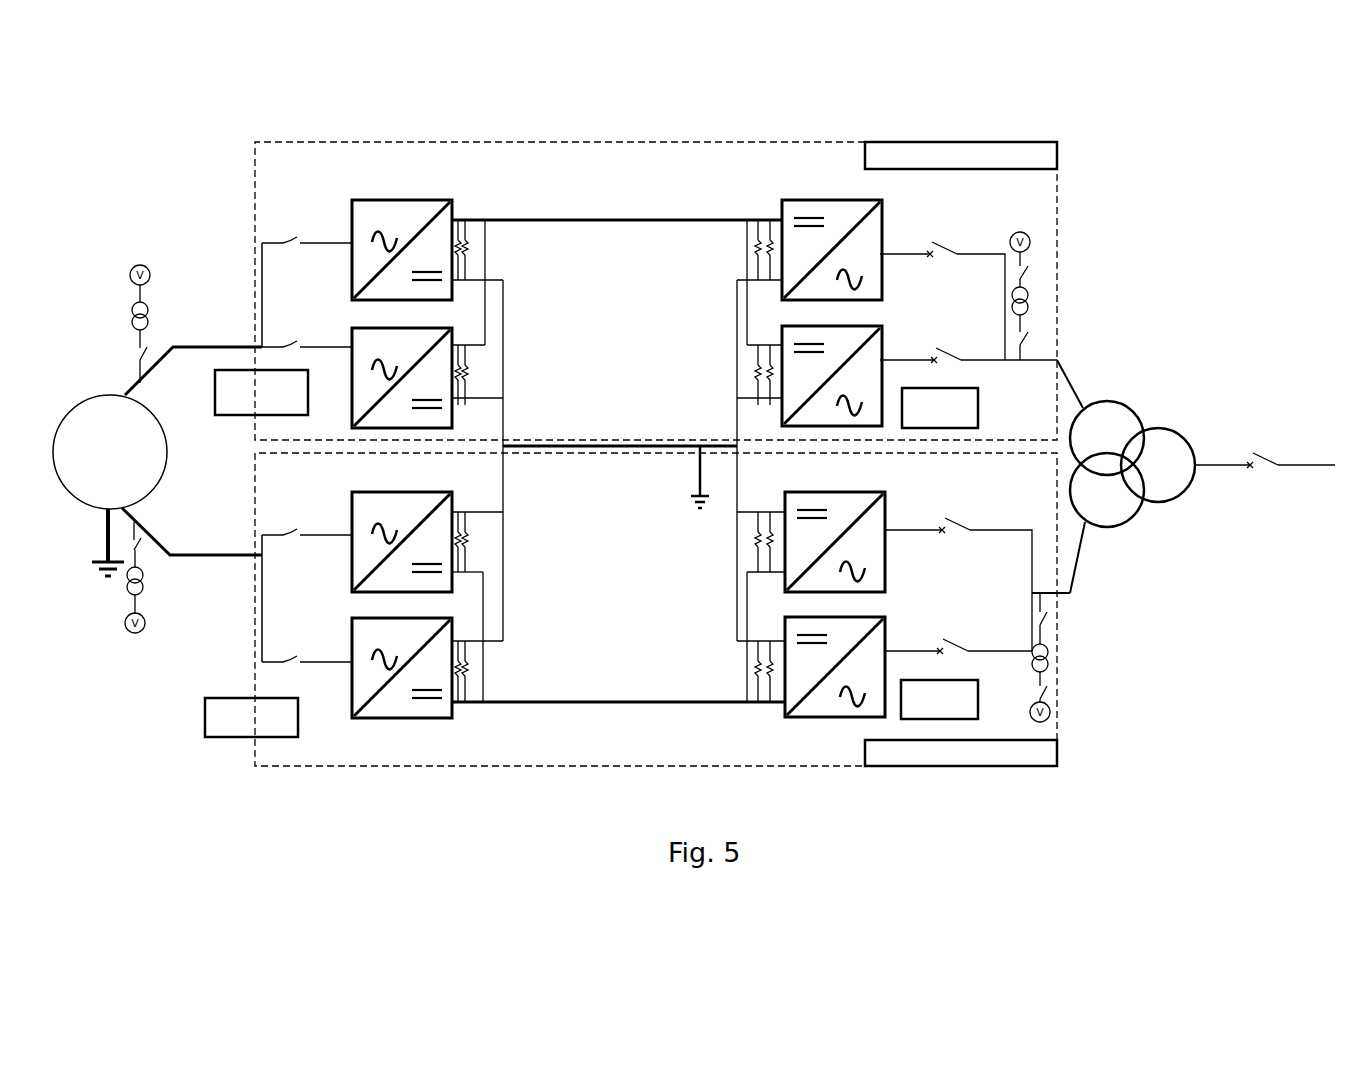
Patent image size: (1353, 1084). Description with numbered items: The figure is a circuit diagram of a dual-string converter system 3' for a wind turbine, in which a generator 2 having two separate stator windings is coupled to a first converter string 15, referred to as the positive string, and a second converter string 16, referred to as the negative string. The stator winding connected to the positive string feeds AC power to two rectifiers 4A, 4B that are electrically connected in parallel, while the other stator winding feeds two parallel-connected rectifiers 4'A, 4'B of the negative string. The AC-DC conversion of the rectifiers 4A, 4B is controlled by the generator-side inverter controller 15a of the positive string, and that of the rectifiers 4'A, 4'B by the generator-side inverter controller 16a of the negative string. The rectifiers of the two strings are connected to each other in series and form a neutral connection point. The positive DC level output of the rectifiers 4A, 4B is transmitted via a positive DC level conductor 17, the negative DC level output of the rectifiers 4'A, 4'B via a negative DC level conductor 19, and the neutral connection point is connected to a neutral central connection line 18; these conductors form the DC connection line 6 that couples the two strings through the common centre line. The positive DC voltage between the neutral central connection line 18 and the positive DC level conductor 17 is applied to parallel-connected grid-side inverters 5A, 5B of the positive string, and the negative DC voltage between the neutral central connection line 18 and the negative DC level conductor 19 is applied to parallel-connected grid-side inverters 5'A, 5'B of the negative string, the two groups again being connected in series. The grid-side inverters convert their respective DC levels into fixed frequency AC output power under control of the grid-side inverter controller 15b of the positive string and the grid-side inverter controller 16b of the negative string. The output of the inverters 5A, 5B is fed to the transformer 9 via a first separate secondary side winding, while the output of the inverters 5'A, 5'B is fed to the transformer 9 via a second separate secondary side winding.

The generator 2 is at (100, 395).
The dual-string converter system 3' is at (649, 464).
The rectifier of the positive string 4A is at (388, 200).
The rectifier of the positive string 4B is at (452, 418).
The rectifier of the negative string 4'A is at (365, 535).
The rectifier of the negative string 4'B is at (409, 687).
The grid-side inverter of the positive string 5A is at (790, 200).
The grid-side inverter of the positive string 5B is at (783, 418).
The grid-side inverter of the negative string 5'A is at (877, 531).
The grid-side inverter of the negative string 5'B is at (792, 680).
The DC connection line 6 is at (618, 487).
The transformer 9 is at (1150, 410).
The first converter string 15 is at (662, 321).
The generator-side inverter controller of the positive string 15a is at (237, 415).
The grid-side inverter controller of the positive string 15b is at (978, 408).
The second converter string 16 is at (649, 616).
The generator-side inverter controller of the negative string 16a is at (222, 737).
The grid-side inverter controller of the negative string 16b is at (955, 680).
The positive DC level conductor 17 is at (597, 220).
The neutral central connection line 18 is at (622, 446).
The negative DC level conductor 19 is at (595, 702).